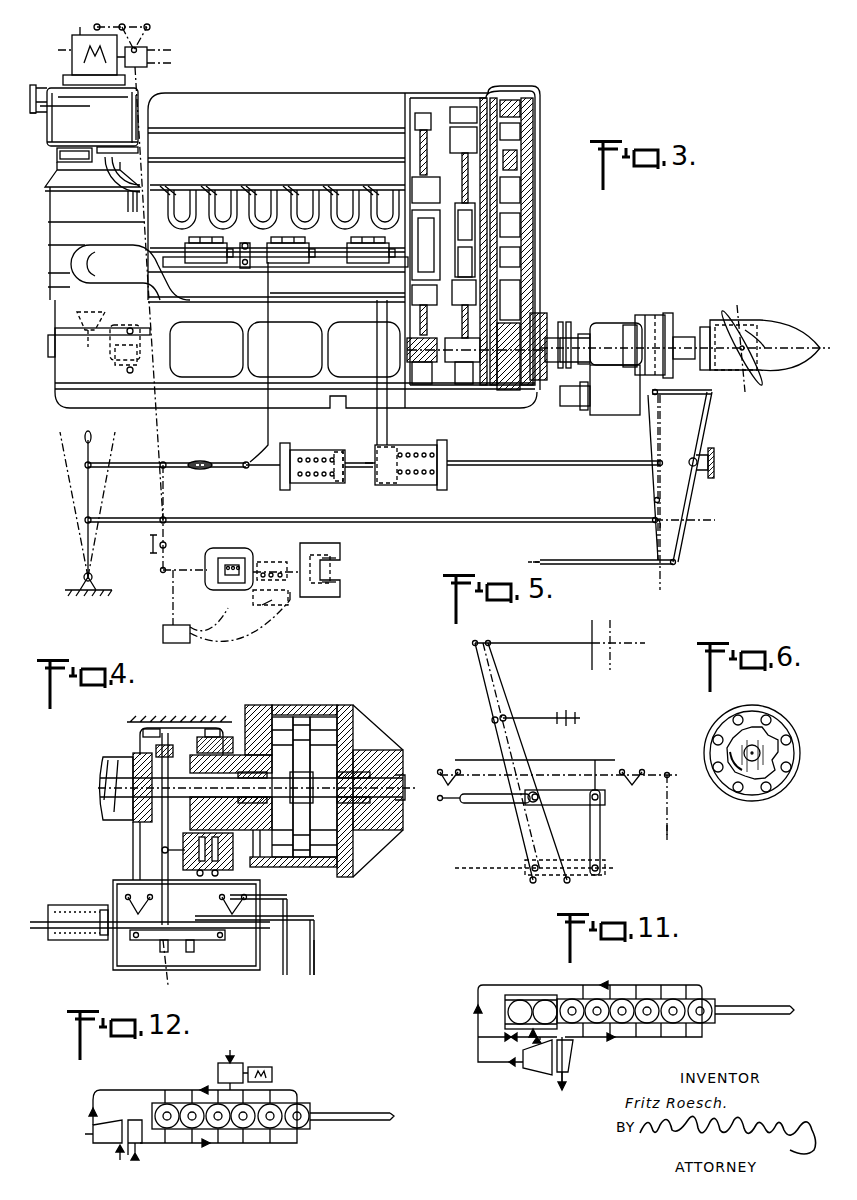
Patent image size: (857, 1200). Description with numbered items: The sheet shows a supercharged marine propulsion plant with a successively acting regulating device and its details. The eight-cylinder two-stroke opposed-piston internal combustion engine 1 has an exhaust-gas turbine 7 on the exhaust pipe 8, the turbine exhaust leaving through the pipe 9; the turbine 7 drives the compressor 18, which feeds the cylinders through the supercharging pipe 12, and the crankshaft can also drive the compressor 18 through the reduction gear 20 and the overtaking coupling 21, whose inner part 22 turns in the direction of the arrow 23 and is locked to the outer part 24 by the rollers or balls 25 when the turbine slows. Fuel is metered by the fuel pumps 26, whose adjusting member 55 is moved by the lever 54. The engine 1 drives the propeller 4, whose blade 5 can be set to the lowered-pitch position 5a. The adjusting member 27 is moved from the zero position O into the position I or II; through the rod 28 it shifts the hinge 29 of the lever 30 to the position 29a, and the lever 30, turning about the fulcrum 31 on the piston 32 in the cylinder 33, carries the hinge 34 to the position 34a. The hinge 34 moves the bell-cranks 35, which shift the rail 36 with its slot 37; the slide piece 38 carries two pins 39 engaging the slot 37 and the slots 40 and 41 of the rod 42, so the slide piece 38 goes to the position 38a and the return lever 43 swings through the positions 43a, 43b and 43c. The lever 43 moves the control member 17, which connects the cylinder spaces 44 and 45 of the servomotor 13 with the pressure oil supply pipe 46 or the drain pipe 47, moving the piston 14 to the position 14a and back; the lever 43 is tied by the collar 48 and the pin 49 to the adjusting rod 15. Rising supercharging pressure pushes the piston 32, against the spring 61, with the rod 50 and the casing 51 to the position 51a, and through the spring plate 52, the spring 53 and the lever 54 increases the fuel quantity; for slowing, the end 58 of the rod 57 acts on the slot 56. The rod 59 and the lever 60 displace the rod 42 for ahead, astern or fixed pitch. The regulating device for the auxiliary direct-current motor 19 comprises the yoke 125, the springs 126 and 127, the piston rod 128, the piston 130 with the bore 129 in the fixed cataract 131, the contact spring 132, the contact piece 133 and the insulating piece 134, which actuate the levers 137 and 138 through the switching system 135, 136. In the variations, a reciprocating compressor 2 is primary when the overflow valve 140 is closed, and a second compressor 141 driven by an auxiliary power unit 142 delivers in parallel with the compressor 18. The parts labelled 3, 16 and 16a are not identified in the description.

In FIG. 3, the internal combustion engine 1 is at (300, 96).
In FIG. 11, the internal combustion engine 1 is at (712, 998).
In FIG. 12, the internal combustion engine 1 is at (312, 1100).
In FIG. 11, the reciprocating compressor 2 is at (505, 1012).
In FIG. 3, the shaft 3 is at (583, 333).
In FIG. 4, the shaft 3 is at (108, 760).
In FIG. 11, the shaft 3 is at (776, 1014).
In FIG. 12, the shaft 3 is at (378, 1121).
In FIG. 3, the propeller 4 is at (772, 328).
In FIG. 3, the blades 5 is at (728, 318).
In FIG. 3, the blade position 5a is at (741, 310).
In FIG. 3, the exhaust-gas turbine 7 is at (104, 139).
In FIG. 11, the exhaust-gas turbine 7 is at (572, 1060).
In FIG. 12, the exhaust-gas turbine 7 is at (138, 1143).
In FIG. 3, the exhaust pipe 8 is at (277, 198).
In FIG. 11, the exhaust pipe 8 is at (660, 1037).
In FIG. 12, the exhaust pipe 8 is at (230, 1143).
In FIG. 3, the pipe 9 is at (52, 70).
In FIG. 11, the pipe 9 is at (568, 1080).
In FIG. 12, the pipe 9 is at (130, 1158).
In FIG. 3, the supercharging pipe 12 is at (194, 289).
In FIG. 11, the supercharging pipe 12 is at (522, 986).
In FIG. 12, the supercharging pipe 12 is at (180, 1090).
In FIG. 3, the servomotor 13 is at (630, 325).
In FIG. 4, the servomotor 13 is at (250, 710).
In FIG. 3, the piston 14 is at (643, 315).
In FIG. 4, the piston 14 is at (298, 720).
In FIG. 5, the piston 14 is at (596, 620).
In FIG. 3, the piston position 14a is at (657, 315).
In FIG. 5, the piston position 14a is at (612, 622).
In FIG. 3, the adjusting rod 15 is at (705, 327).
In FIG. 4, the adjusting rod 15 is at (405, 800).
In FIG. 3, the spinner 16 is at (756, 372).
In FIG. 3, the spinner housing 16a is at (774, 325).
In FIG. 4, the control member 17 is at (160, 852).
In FIG. 3, the compressor 18 is at (78, 246).
In FIG. 11, the compressor 18 is at (542, 1070).
In FIG. 12, the compressor 18 is at (110, 1143).
In FIG. 3, the auxiliary direct-current motor 19 is at (66, 51).
In FIG. 3, the reduction gear 20 is at (90, 344).
In FIG. 3, the overtaking coupling 21 is at (136, 326).
In FIG. 6, the overtaking coupling 21 is at (710, 732).
In FIG. 3, the inner part 22 is at (112, 362).
In FIG. 6, the inner part 22 is at (750, 790).
In FIG. 6, the arrow 23 is at (782, 772).
In FIG. 6, the outer part 24 is at (768, 716).
In FIG. 6, the rollers or balls 25 is at (716, 767).
In FIG. 3, the fuel pumps 26 is at (290, 250).
In FIG. 3, the adjusting member 27 is at (92, 492).
In FIG. 3, the rod 28 is at (236, 520).
In FIG. 3, the hinge 29 is at (655, 526).
In FIG. 3, the hinge position 29a is at (690, 519).
In FIG. 3, the lever 30 is at (655, 499).
In FIG. 3, the fulcrum 31 is at (657, 466).
In FIG. 3, the piston 32 is at (392, 446).
In FIG. 3, the cylinder 33 is at (412, 446).
In FIG. 3, the hinge 34 is at (662, 390).
In FIG. 4, the hinge 34 is at (288, 896).
In FIG. 5, the hinge 34 is at (670, 786).
In FIG. 3, the hinge position 34a is at (652, 428).
In FIG. 4, the bell-cranks 35 is at (132, 895).
In FIG. 5, the bell-cranks 35 is at (444, 768).
In FIG. 4, the rail 36 is at (113, 952).
In FIG. 5, the rail 36 is at (448, 808).
In FIG. 4, the slot 37 is at (218, 938).
In FIG. 5, the slot 37 is at (490, 796).
In FIG. 4, the slide piece 38 is at (188, 930).
In FIG. 5, the slide piece 38 is at (554, 806).
In FIG. 5, the slide piece position 38a is at (580, 876).
In FIG. 4, the pins 39 is at (160, 946).
In FIG. 5, the pins 39 is at (536, 792).
In FIG. 4, the slot 40 is at (194, 948).
In FIG. 5, the slot 40 is at (601, 826).
In FIG. 4, the slot 41 is at (179, 964).
In FIG. 5, the slot 41 is at (562, 882).
In FIG. 4, the rod 42 is at (312, 918).
In FIG. 5, the rod 42 is at (574, 760).
In FIG. 4, the return lever 43 is at (160, 840).
In FIG. 5, the return lever 43 is at (495, 702).
In FIG. 5, the return lever position 43a is at (492, 692).
In FIG. 5, the return lever position 43b is at (492, 668).
In FIG. 5, the return lever position 43c is at (505, 684).
In FIG. 4, the cylinder space 44 is at (280, 725).
In FIG. 4, the cylinder space 45 is at (328, 725).
In FIG. 4, the pressure oil supply pipe 46 is at (215, 876).
In FIG. 4, the drain pipe 47 is at (198, 876).
In FIG. 4, the collar 48 is at (155, 748).
In FIG. 4, the pin 49 is at (175, 745).
In FIG. 3, the rod 50 is at (514, 462).
In FIG. 3, the casing 51 is at (318, 452).
In FIG. 3, the casing position 51a is at (338, 484).
In FIG. 3, the spring plate 52 is at (334, 452).
In FIG. 3, the spring 53 is at (318, 482).
In FIG. 3, the lever 54 is at (245, 265).
In FIG. 3, the adjusting member 55 is at (258, 248).
In FIG. 3, the slot 56 is at (182, 470).
In FIG. 3, the rod 57 is at (148, 465).
In FIG. 3, the end 58 is at (188, 465).
In FIG. 3, the rod 59 is at (580, 562).
In FIG. 3, the lever 60 is at (702, 422).
In FIG. 4, the lever 60 is at (316, 942).
In FIG. 5, the lever 60 is at (670, 830).
In FIG. 3, the spring 61 is at (408, 482).
In FIG. 3, the zero position O is at (61, 435).
In FIG. 3, the position I is at (86, 425).
In FIG. 3, the position II is at (116, 435).
In FIG. 3, the yoke 125 is at (222, 552).
In FIG. 3, the spring 126 is at (236, 562).
In FIG. 3, the spring 127 is at (276, 560).
In FIG. 3, the piston rod 128 is at (302, 548).
In FIG. 3, the bore 129 is at (338, 584).
In FIG. 3, the piston 130 is at (338, 560).
In FIG. 3, the cataract 131 is at (318, 590).
In FIG. 3, the contact spring 132 is at (254, 602).
In FIG. 3, the contact piece 133 is at (287, 606).
In FIG. 3, the insulating piece 134 is at (262, 608).
In FIG. 3, the switching system 135 is at (165, 626).
In FIG. 3, the switching system 136 is at (147, 64).
In FIG. 3, the lever 137 is at (160, 22).
In FIG. 3, the lever 138 is at (94, 27).
In FIG. 11, the overflow valve 140 is at (508, 1044).
In FIG. 12, the compressor 141 is at (236, 1066).
In FIG. 12, the auxiliary power unit 142 is at (268, 1066).